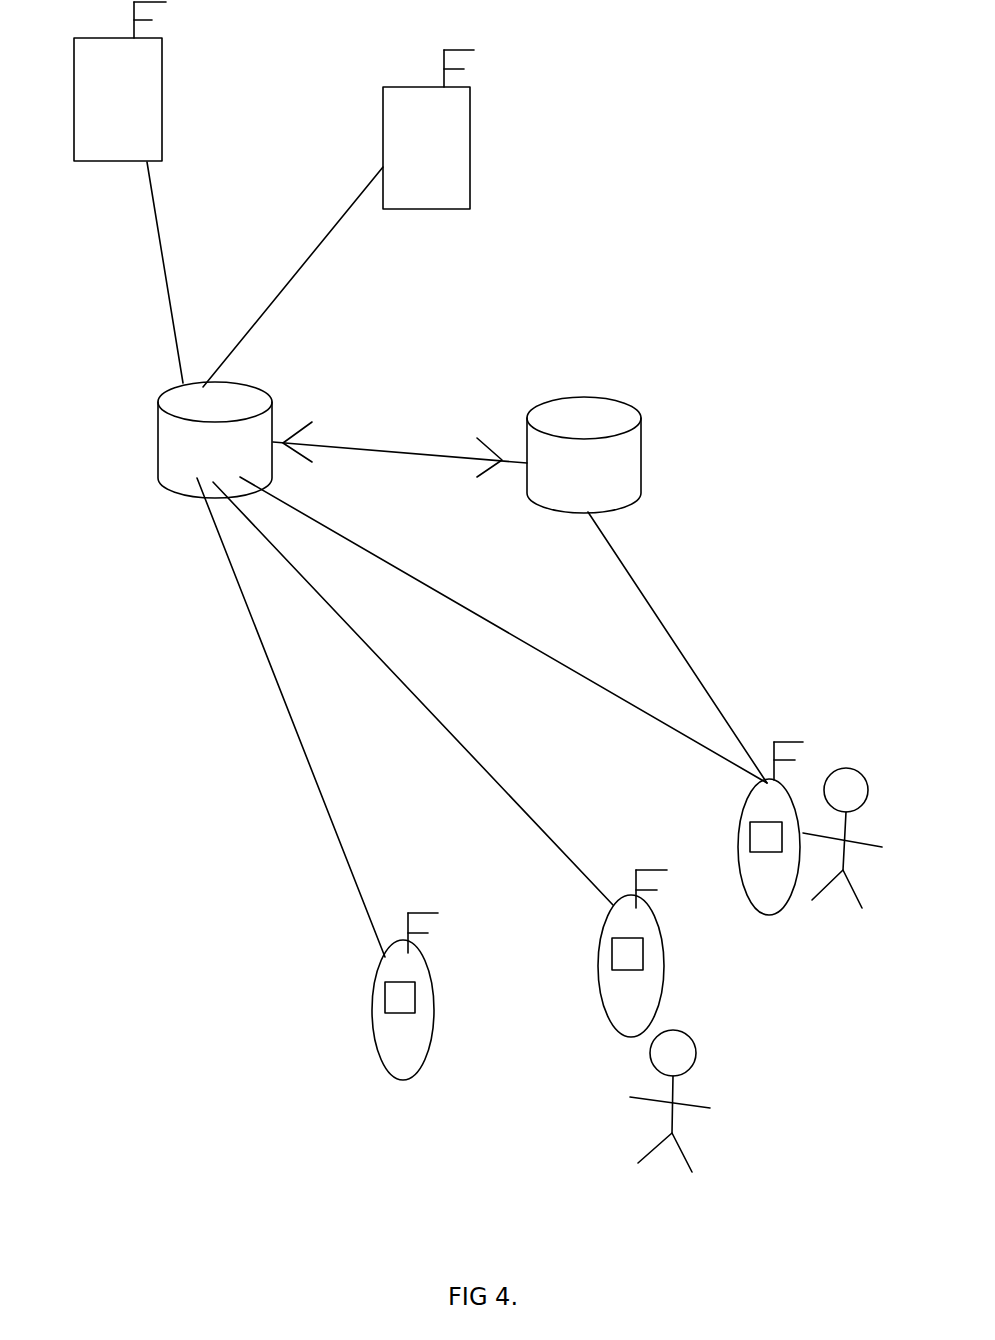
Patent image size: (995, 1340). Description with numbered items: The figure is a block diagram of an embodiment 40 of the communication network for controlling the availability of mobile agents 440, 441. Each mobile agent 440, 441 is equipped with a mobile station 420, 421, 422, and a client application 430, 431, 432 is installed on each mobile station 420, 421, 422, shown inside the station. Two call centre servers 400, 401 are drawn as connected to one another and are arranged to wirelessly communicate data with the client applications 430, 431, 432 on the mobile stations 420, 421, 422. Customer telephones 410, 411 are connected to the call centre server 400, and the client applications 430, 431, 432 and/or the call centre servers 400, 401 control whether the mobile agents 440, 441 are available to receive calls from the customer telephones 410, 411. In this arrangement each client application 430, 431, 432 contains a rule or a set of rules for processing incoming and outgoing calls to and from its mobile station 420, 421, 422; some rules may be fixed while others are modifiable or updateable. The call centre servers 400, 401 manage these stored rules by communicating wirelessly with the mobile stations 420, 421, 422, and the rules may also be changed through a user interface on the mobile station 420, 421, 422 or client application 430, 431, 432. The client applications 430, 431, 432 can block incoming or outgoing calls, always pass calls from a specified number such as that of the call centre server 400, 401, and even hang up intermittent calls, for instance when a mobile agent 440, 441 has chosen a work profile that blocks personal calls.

The embodiment of the communication network 40 is at (740, 88).
The call centre server 400 is at (220, 390).
The call centre server 401 is at (577, 408).
The customer telephone 410 is at (390, 87).
The customer telephone 411 is at (145, 162).
The mobile station 420 is at (412, 1072).
The mobile station 421 is at (638, 1023).
The mobile station 422 is at (762, 902).
The client application 430 is at (392, 995).
The client application 431 is at (617, 950).
The client application 432 is at (747, 828).
The mobile agent 440 is at (687, 1052).
The mobile agent 441 is at (847, 767).